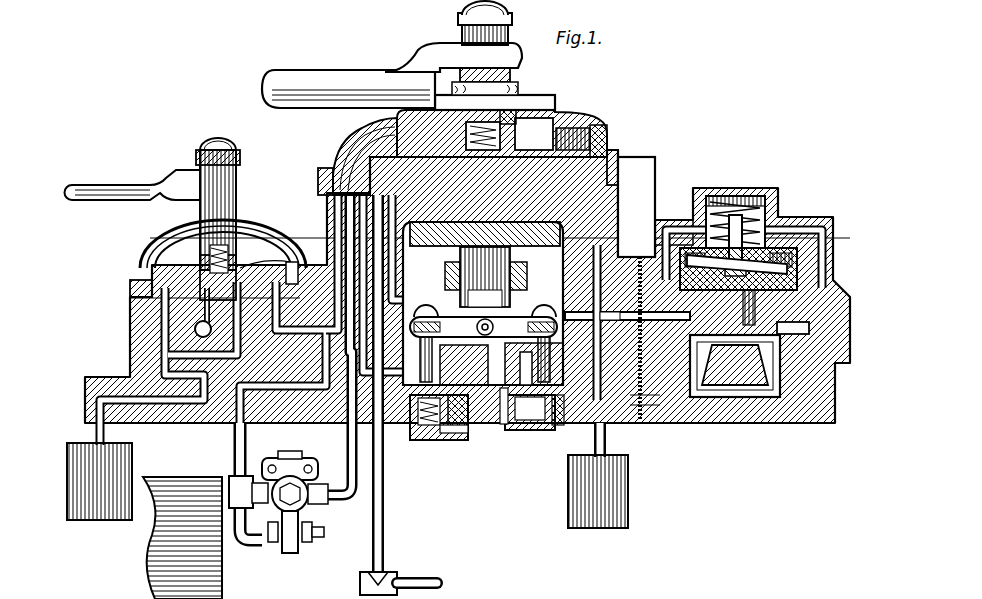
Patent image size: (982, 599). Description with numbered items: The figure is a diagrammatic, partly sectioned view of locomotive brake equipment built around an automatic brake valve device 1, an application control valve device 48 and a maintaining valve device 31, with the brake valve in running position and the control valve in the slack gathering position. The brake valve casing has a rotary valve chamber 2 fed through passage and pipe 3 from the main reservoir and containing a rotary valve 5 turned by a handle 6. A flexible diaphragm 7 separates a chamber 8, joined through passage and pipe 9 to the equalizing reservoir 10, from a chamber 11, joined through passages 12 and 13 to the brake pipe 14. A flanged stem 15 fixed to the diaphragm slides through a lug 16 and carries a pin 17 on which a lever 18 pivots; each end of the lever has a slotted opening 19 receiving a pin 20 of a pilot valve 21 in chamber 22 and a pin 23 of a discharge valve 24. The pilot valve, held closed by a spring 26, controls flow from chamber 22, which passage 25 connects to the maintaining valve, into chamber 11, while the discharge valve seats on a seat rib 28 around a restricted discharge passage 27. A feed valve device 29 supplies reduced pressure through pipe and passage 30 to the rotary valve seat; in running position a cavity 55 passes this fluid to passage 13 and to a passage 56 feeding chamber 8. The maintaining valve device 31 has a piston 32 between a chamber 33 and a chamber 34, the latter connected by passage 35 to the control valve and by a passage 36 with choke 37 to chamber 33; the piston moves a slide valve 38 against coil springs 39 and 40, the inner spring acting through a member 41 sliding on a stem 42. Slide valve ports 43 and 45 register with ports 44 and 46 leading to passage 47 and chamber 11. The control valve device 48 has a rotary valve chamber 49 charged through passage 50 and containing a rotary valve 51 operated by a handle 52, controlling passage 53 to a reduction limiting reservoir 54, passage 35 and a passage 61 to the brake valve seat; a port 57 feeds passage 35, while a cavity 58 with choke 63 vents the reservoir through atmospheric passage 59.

The automatic brake valve device 1 is at (548, 100).
The rotary valve chamber 2 is at (560, 118).
The passage and pipe 3 is at (338, 160).
The rotary valve 5 is at (540, 143).
The handle 6 is at (292, 88).
The flexible diaphragm 7 is at (620, 160).
The chamber 8 is at (600, 140).
The passage and pipe 9 is at (622, 182).
The equalizing reservoir 10 is at (622, 492).
The chamber 11 is at (632, 232).
The passage 12 is at (450, 272).
The passage 13 is at (395, 423).
The brake pipe 14 is at (410, 580).
The flanged stem 15 is at (490, 270).
The lug 16 is at (520, 282).
The pin 17 is at (470, 290).
The lever 18 is at (489, 408).
The slotted opening 19 is at (425, 313).
The pin 20 is at (440, 338).
The pilot valve 21 is at (460, 432).
The chamber 22 is at (430, 440).
The pin 23 is at (485, 297).
The discharge valve 24 is at (508, 430).
The passage 25 is at (500, 430).
The spring 26 is at (440, 434).
The restricted discharge passage 27 is at (528, 430).
The seat rib 28 is at (560, 408).
The feed valve device 29 is at (292, 547).
The pipe and passage 30 is at (346, 430).
The maintaining valve device 31 is at (826, 236).
The piston 32 is at (822, 232).
The chamber 33 is at (788, 250).
The chamber 34 is at (790, 276).
The passage 35 is at (160, 333).
The passage 36 is at (790, 343).
The choke 37 is at (790, 318).
The slide valve 38 is at (783, 362).
The coil spring 39 is at (697, 200).
The coil spring 40 is at (735, 225).
The member 41 is at (770, 235).
The stem 42 is at (745, 200).
The port 43 is at (651, 386).
The port 44 is at (651, 373).
The port 45 is at (638, 309).
The port 46 is at (640, 280).
The passage 47 is at (656, 338).
The application control valve device 48 is at (165, 268).
The rotary valve chamber 49 is at (255, 232).
The passage 50 is at (296, 266).
The rotary valve 51 is at (290, 252).
The handle 52 is at (82, 200).
The passage 53 is at (240, 335).
The reduction limiting reservoir 54 is at (112, 482).
The cavity 55 is at (440, 172).
The passage 56 is at (518, 142).
The port 57 is at (150, 290).
The cavity 58 is at (238, 280).
The atmospheric passage 59 is at (198, 324).
The passage 61 is at (332, 180).
The choke 63 is at (165, 252).